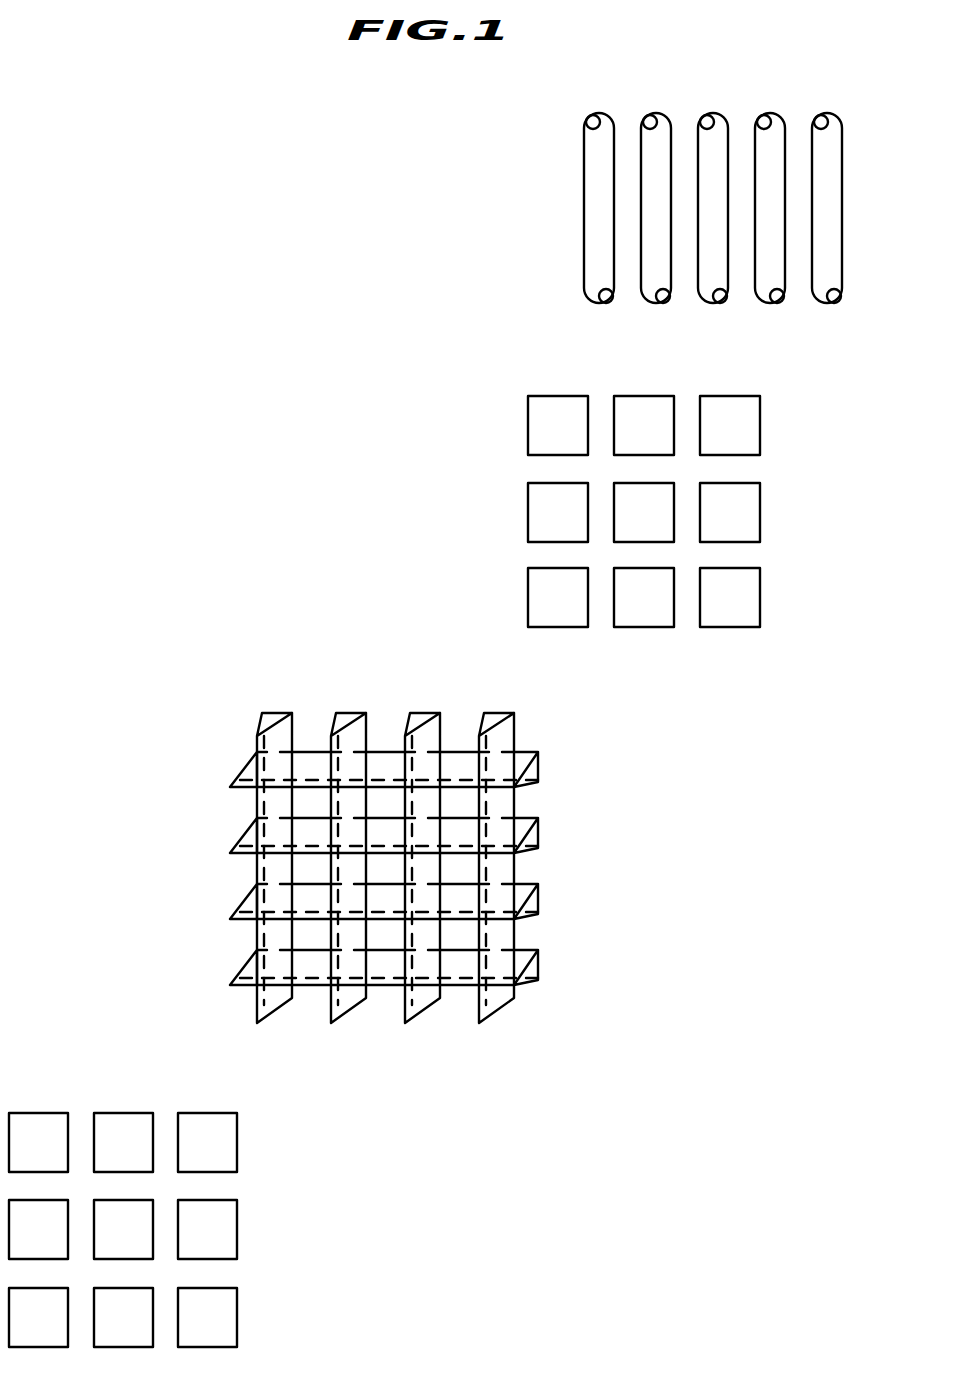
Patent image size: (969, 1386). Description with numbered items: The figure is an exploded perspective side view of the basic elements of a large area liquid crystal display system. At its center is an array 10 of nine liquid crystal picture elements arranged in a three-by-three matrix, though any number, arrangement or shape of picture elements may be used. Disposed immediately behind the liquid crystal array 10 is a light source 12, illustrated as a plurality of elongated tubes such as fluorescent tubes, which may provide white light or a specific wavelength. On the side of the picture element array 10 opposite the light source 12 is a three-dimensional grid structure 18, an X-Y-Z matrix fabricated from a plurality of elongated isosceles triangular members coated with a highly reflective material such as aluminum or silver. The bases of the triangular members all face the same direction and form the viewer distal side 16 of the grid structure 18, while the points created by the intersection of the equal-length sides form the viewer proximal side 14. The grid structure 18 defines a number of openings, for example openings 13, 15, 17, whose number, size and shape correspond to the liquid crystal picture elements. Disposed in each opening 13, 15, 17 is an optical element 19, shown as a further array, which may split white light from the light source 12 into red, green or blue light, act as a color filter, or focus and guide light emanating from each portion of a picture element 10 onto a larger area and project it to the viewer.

The array of liquid crystal picture elements 10 is at (482, 475).
The light source 12 is at (566, 150).
The opening 13 is at (328, 807).
The viewer proximal side 14 is at (256, 803).
The opening 15 is at (403, 808).
The viewer distal side 16 is at (276, 712).
The opening 17 is at (477, 808).
The three-dimensional grid structure 18 is at (425, 827).
The optical element 19 is at (304, 1204).